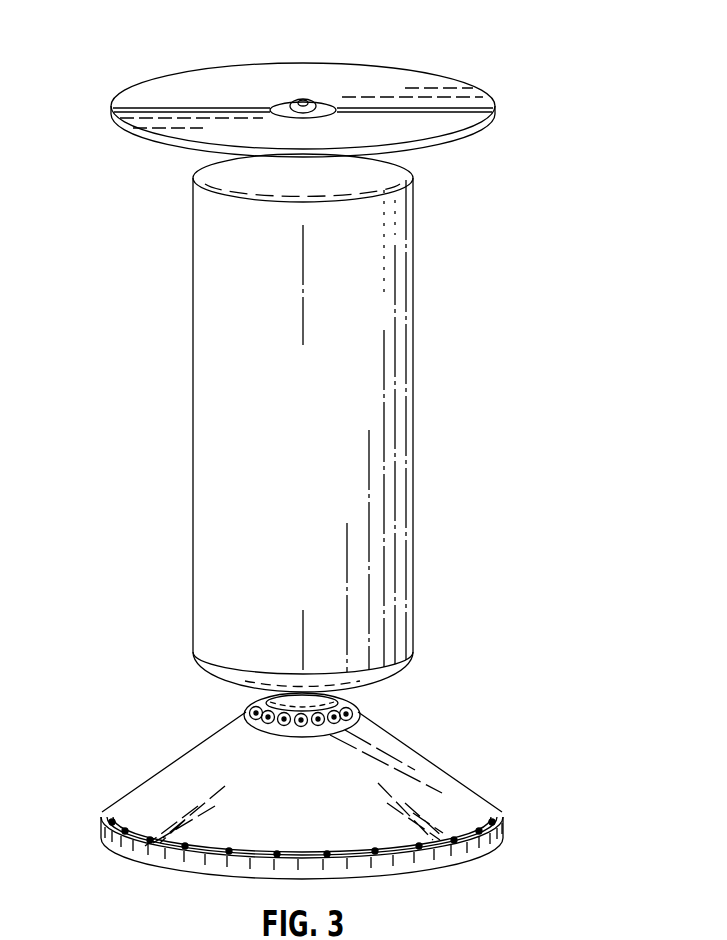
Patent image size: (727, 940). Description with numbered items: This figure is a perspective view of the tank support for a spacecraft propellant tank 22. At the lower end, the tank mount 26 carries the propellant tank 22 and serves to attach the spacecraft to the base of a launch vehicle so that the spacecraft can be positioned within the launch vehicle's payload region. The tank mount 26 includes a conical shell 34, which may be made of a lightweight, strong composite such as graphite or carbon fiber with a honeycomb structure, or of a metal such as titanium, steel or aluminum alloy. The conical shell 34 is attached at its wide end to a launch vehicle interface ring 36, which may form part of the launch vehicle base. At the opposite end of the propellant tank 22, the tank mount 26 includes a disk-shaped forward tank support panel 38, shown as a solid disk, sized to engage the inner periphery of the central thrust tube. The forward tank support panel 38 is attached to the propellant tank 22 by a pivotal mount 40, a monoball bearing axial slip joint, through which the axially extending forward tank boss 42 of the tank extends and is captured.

The propellant tank 22 is at (218, 393).
The tank mount 26 is at (388, 719).
The conical shell 34 is at (413, 752).
The launch vehicle interface ring 36 is at (112, 843).
The forward tank support panel 38 is at (408, 72).
The pivotal mount 40 is at (285, 103).
The forward tank boss 42 is at (303, 100).